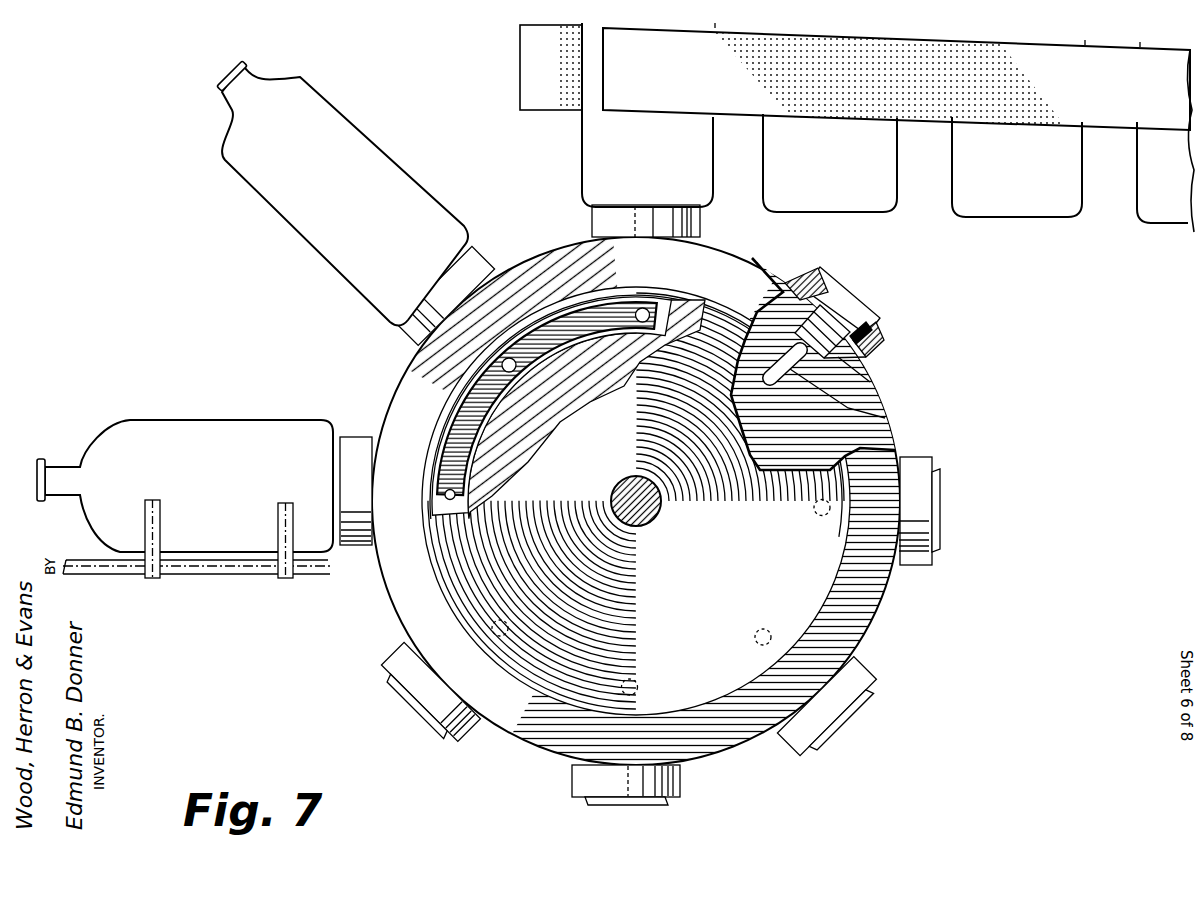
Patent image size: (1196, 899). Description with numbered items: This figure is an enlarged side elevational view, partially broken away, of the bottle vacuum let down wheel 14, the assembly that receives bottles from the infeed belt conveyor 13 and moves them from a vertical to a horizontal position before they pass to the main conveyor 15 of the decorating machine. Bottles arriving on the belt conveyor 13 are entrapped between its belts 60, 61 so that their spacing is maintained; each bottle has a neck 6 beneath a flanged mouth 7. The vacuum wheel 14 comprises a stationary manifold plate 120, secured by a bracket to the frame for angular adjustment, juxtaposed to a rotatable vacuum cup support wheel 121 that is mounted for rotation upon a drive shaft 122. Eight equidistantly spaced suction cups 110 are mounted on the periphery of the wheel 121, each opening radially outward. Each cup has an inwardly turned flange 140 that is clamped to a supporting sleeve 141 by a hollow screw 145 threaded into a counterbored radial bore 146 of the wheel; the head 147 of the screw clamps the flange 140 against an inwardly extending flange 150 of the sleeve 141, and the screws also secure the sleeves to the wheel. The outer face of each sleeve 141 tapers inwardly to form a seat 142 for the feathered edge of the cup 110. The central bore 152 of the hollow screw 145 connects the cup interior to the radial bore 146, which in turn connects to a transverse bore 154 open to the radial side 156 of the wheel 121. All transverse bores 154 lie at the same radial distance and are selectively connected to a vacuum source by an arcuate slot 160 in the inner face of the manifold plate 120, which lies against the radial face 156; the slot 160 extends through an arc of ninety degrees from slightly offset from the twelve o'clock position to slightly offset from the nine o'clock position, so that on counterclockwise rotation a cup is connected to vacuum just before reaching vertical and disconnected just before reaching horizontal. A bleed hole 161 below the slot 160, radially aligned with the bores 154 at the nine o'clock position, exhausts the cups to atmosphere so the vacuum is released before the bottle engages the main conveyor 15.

The neck 6 is at (262, 58).
The flanged mouth 7 is at (232, 70).
The infeed belt conveyor 13 is at (488, 86).
The let down vacuum wheel 14 is at (978, 413).
The main conveyor 15 is at (210, 582).
The belt 60 is at (896, 76).
The belt 61 is at (522, 44).
The suction cup 110 is at (896, 309).
The stationary manifold plate 120 is at (690, 302).
The rotatable vacuum cup support wheel 121 is at (762, 263).
The drive shaft 122 is at (656, 514).
The inwardly turned flange 140 is at (800, 293).
The supporting sleeve 141 is at (882, 352).
The seat 142 is at (886, 330).
The hollow screw 145 is at (872, 388).
The radial bore 146 is at (830, 372).
The head 147 is at (865, 308).
The inwardly extending flange 150 is at (880, 360).
The central bore 152 is at (850, 292).
The transverse bore 154 is at (641, 308).
The radial side 156 is at (585, 320).
The arcuate slot 160 is at (474, 402).
The bleed hole 161 is at (424, 527).